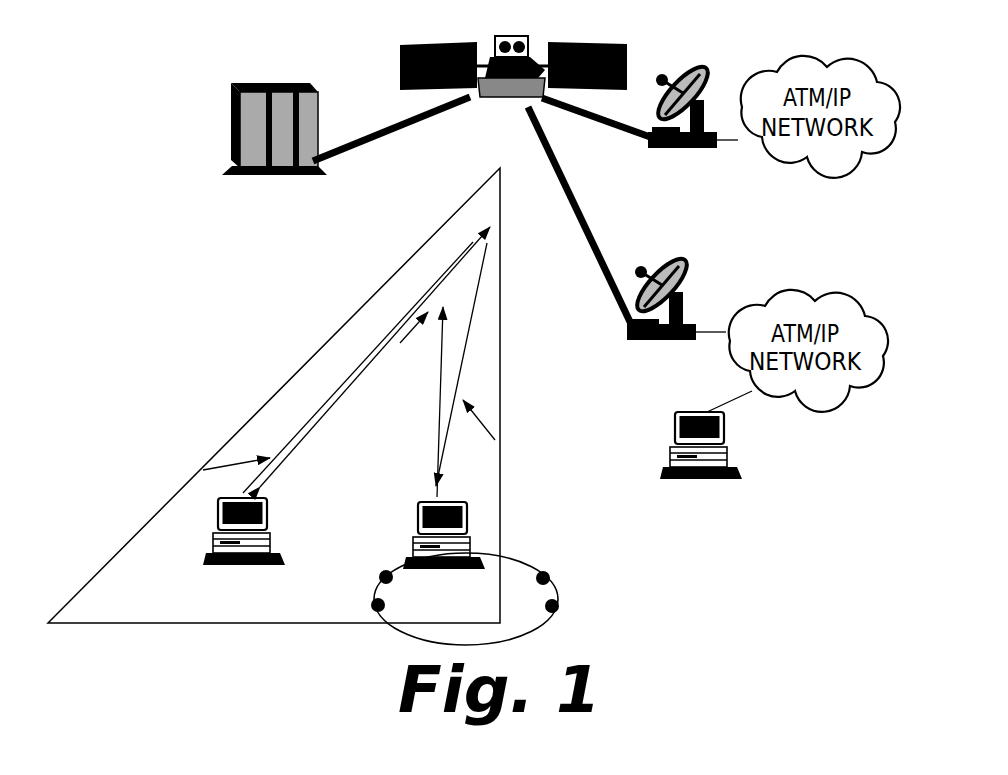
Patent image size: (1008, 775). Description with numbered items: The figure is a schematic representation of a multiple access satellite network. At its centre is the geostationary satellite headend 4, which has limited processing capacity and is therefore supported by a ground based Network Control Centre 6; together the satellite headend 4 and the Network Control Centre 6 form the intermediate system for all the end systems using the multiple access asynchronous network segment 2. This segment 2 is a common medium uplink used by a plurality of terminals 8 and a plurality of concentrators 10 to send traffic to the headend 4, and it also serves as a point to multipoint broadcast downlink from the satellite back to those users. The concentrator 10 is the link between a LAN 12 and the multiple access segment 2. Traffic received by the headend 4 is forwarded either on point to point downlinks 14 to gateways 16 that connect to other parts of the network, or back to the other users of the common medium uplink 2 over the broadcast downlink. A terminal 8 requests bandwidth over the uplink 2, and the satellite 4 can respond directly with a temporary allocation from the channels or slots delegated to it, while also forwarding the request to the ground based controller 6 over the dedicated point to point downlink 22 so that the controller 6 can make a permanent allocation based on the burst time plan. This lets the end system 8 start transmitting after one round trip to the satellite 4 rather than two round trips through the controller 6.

The multiple access asynchronous network segment 2 is at (274, 395).
The geostationary satellite headend 4 is at (497, 38).
The Network Control Centre 6 is at (231, 130).
The terminal 8 is at (232, 564).
The concentrator 10 is at (465, 517).
The LAN 12 is at (540, 625).
The point to point downlink 14 is at (585, 117).
The gateway 16 is at (690, 148).
The dedicated point to point downlink 22 is at (391, 132).